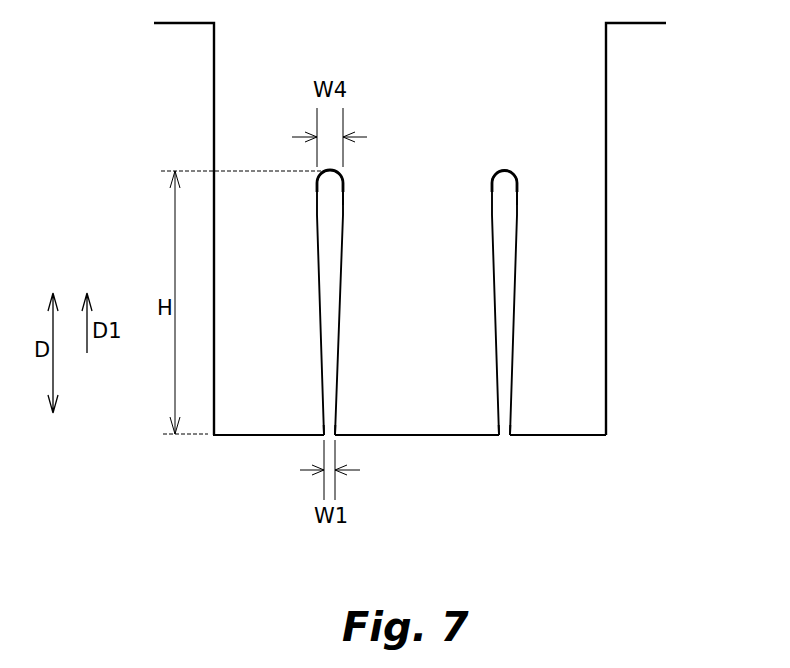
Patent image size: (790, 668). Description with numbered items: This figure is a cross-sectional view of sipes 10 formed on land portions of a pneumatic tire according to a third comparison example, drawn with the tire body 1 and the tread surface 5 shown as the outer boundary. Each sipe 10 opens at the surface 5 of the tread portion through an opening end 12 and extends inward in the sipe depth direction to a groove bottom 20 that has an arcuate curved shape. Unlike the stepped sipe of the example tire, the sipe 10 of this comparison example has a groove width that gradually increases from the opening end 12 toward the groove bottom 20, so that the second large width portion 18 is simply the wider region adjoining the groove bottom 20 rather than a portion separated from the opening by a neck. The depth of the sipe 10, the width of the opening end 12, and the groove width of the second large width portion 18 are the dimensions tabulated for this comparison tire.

The housing 1 is at (590, 80).
The surface of a tread portion 5 is at (563, 436).
The sipe 10 is at (313, 217).
The opening end 12 is at (325, 440).
The second large width portion 18 is at (342, 190).
The groove bottom 20 is at (330, 171).